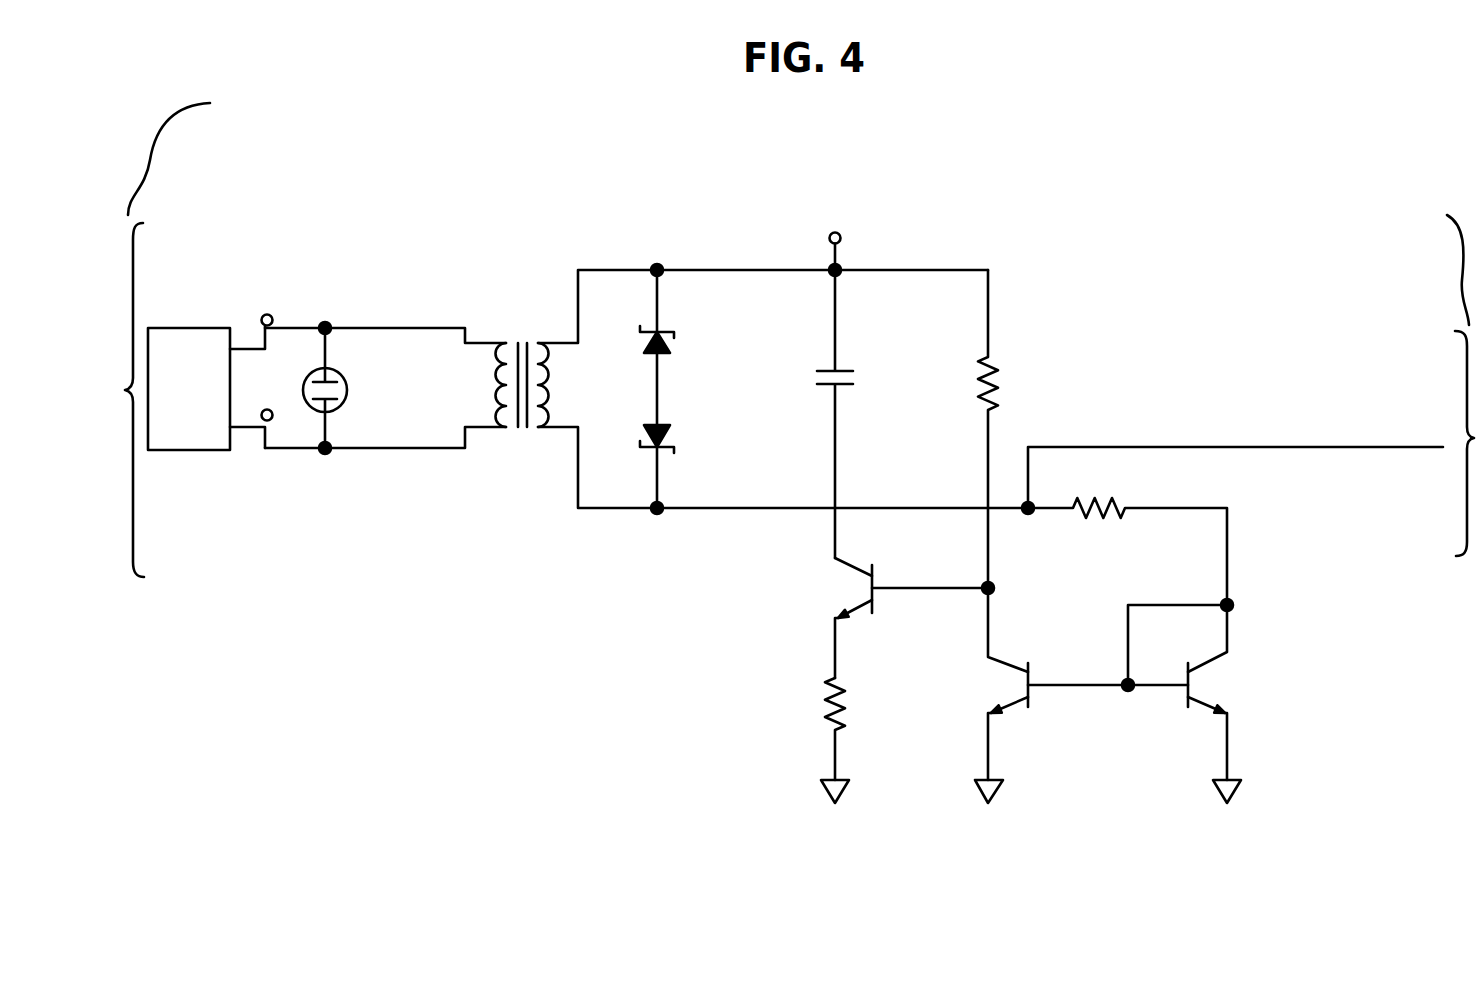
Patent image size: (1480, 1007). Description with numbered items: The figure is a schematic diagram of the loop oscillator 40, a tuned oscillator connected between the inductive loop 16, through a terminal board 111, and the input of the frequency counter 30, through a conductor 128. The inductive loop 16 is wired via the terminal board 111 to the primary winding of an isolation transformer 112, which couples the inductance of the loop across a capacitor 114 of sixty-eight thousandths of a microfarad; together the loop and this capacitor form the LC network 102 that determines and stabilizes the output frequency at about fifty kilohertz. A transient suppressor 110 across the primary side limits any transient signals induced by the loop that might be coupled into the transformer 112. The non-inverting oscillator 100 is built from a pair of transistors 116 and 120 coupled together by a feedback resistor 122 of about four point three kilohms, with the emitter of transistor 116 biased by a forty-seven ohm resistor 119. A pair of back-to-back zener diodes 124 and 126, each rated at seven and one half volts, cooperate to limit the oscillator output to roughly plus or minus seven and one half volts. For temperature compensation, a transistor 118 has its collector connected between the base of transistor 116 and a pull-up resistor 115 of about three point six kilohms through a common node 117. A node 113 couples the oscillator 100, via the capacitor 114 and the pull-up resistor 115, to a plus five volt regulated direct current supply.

The inductive loop 16 is at (240, 322).
The frequency counter 30 is at (1340, 363).
The loop oscillator 40 is at (1076, 204).
The non-inverting oscillator 100 is at (642, 688).
The LC network 102 is at (1145, 350).
The transient suppressor 110 is at (343, 405).
The terminal board 111 is at (222, 308).
The isolation transformer 112 is at (492, 343).
The node 113 is at (831, 268).
The capacitor 114 is at (850, 371).
The pull up resistor 115 is at (1001, 357).
The transistor 116 is at (845, 568).
The common node 117 is at (985, 593).
The transistor 118 is at (1002, 712).
The resistor 119 is at (827, 712).
The transistor 120 is at (1197, 705).
The feedback resistor 122 is at (1127, 512).
The zener diode 124 is at (648, 337).
The zener diode 126 is at (645, 452).
The conductor 128 is at (1262, 447).